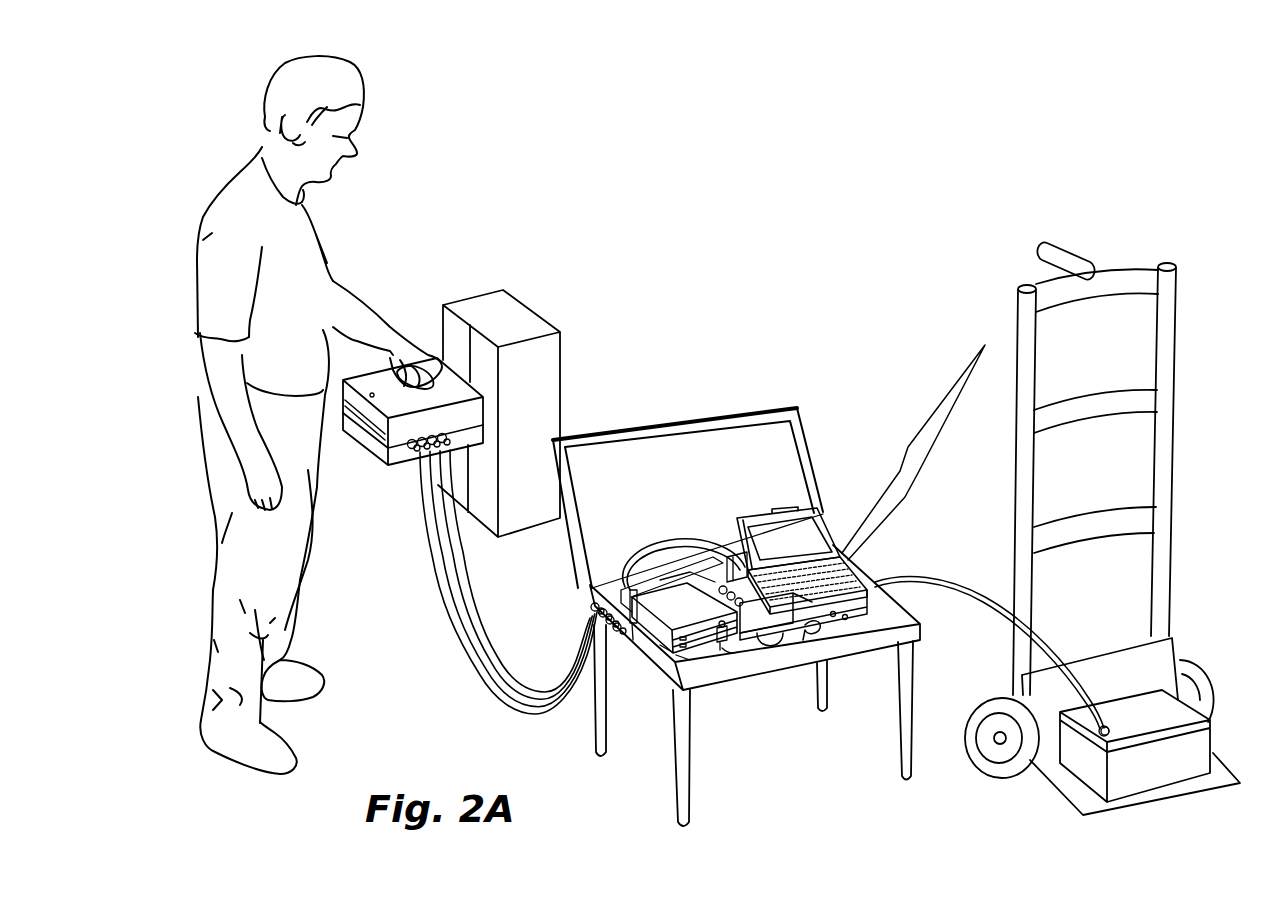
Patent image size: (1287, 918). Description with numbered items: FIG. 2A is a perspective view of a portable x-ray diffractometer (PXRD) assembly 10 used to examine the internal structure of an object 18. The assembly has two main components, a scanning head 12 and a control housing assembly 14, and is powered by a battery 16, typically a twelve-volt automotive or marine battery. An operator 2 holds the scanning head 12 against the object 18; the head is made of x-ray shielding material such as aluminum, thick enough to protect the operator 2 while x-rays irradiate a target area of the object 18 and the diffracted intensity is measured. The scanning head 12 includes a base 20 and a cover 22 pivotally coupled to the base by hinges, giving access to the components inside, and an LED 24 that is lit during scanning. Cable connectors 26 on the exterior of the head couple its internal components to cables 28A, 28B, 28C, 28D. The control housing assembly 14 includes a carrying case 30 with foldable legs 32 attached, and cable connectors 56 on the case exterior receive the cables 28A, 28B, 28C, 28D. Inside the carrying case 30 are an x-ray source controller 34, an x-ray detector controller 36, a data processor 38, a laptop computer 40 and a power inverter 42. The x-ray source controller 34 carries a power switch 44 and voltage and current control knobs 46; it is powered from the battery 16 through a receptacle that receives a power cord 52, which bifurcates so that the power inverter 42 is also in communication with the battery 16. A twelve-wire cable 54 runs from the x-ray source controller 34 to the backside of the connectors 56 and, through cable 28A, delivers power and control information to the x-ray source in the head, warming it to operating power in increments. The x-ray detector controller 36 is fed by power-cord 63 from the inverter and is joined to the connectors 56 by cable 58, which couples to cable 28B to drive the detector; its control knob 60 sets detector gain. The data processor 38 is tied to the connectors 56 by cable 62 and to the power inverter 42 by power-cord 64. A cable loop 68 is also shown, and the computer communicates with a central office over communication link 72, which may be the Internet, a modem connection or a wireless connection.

The operator 2 is at (228, 187).
The Portable X-Ray Diffractometer (PXRD) assembly 10 is at (853, 196).
The scanning head 12 is at (411, 391).
The control housing assembly 14 is at (877, 398).
The battery 16 is at (1161, 726).
The object 18 is at (513, 330).
The base 20 is at (475, 427).
The cover 22 is at (470, 407).
The LED 24 is at (348, 364).
The cable connectors 26 is at (413, 452).
The cable 28A is at (436, 555).
The cable 28B is at (453, 582).
The cable 28C is at (450, 610).
The cable 28D is at (472, 620).
The carrying case 30 is at (755, 693).
The foldable legs 32 is at (688, 805).
The x-ray source controller 34 is at (667, 650).
The x-ray detector controller 36 is at (691, 620).
The data processor 38 is at (862, 604).
The laptop computer 40 is at (830, 523).
The power inverter 42 is at (763, 605).
The power switch 44 is at (683, 667).
The voltage and current control knobs 46 is at (719, 636).
The power cord 52 is at (968, 587).
The cable 54 is at (632, 624).
The cable connectors 56 is at (592, 609).
The cable 58 is at (630, 602).
The control knob 60 is at (722, 648).
The cable 62 is at (650, 563).
The power-cord 63 is at (677, 583).
The power-cord 64 is at (733, 560).
The cable loop 68 is at (685, 543).
The communication link 72 is at (921, 476).